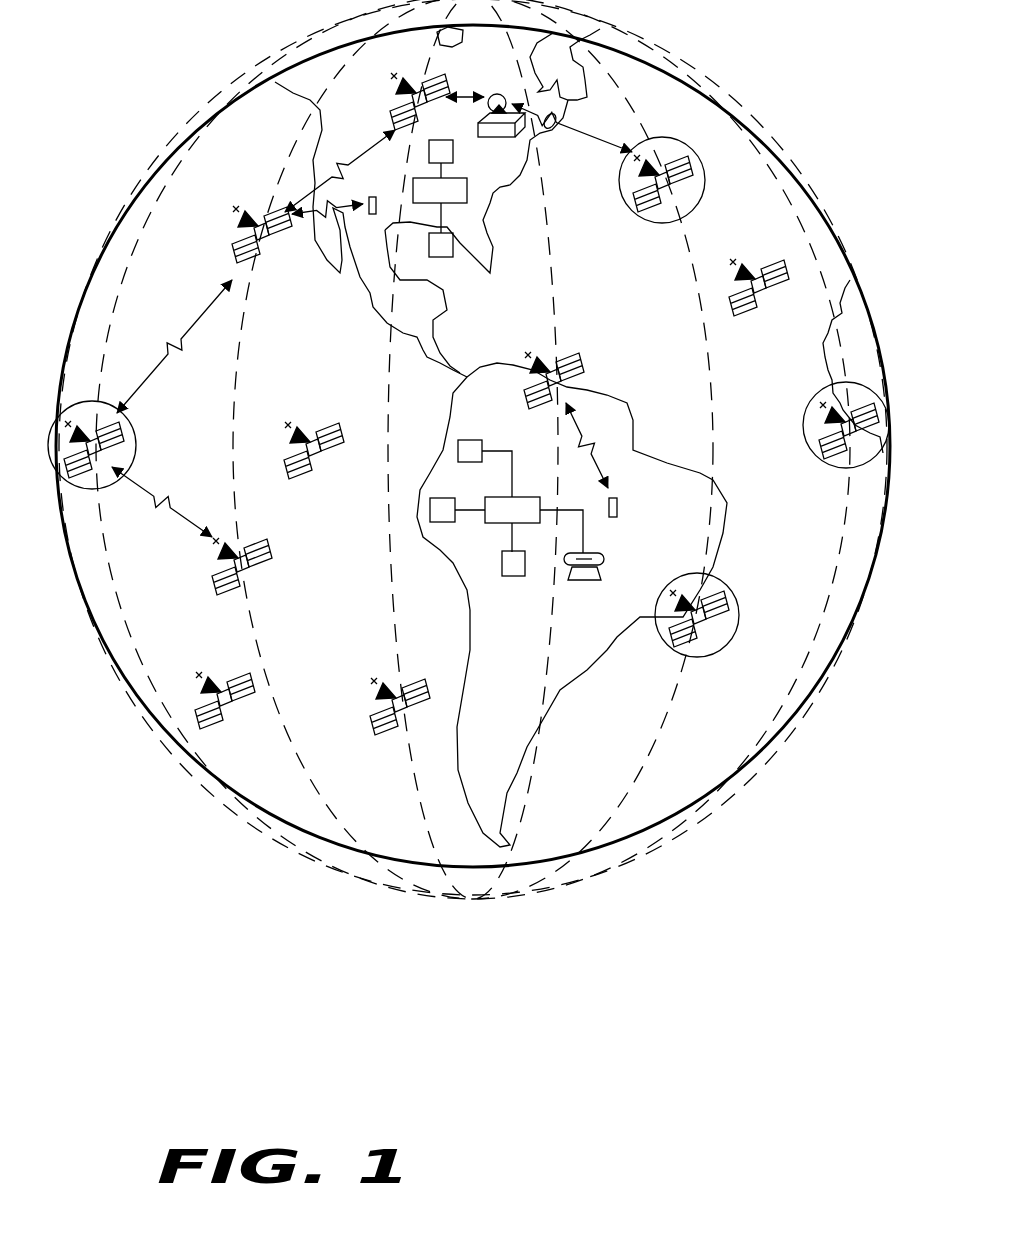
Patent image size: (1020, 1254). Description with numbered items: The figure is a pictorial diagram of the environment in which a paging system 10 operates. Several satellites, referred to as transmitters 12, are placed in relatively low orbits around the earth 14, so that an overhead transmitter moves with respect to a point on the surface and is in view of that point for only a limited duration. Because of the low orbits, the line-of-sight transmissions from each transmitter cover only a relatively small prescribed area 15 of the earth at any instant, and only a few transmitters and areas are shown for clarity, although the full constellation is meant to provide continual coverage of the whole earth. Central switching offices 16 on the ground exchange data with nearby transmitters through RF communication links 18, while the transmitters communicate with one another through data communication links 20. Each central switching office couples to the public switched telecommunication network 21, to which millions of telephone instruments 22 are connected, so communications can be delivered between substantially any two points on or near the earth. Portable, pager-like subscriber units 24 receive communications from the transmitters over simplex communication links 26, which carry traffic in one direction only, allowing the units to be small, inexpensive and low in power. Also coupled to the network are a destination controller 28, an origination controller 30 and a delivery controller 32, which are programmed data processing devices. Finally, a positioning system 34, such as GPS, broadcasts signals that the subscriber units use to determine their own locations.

The paging system 10 is at (478, 1018).
The transmitters 12 is at (634, 212).
The earth 14 is at (82, 297).
The prescribed area 15 is at (705, 182).
The central switching office 16 is at (495, 140).
The RF communication link 18 is at (464, 95).
The data communication link 20 is at (360, 157).
The public switched telecommunication network 21 is at (468, 192).
The telephone instrument 22 is at (585, 582).
The subscriber unit 24 is at (370, 215).
The communication link 26 is at (310, 228).
The destination controller 28 is at (447, 522).
The origination controller 30 is at (512, 577).
The delivery controller 32 is at (468, 440).
The positioning system 34 is at (765, 305).